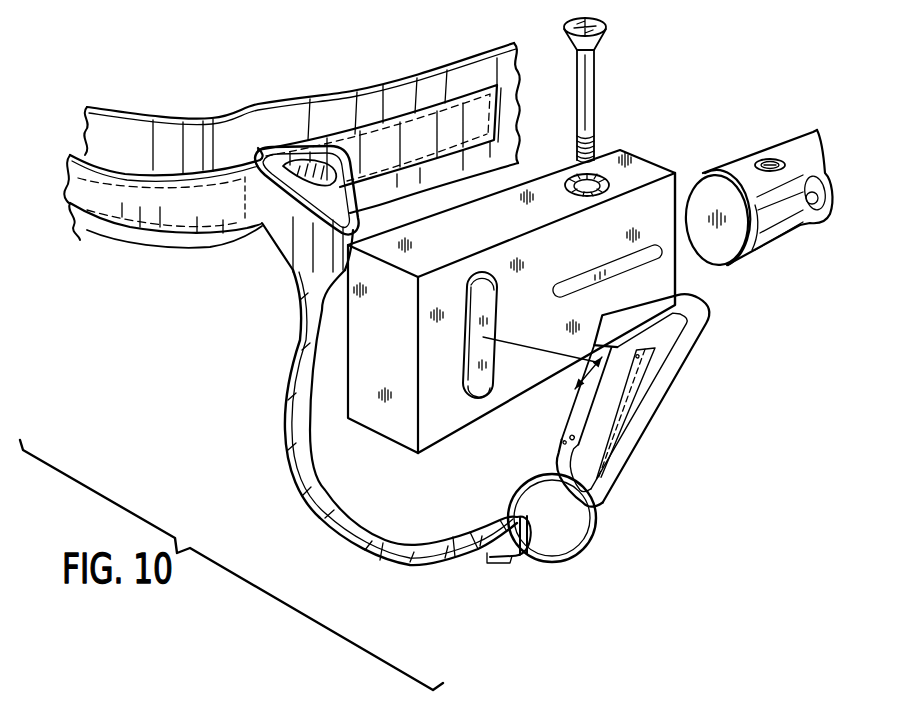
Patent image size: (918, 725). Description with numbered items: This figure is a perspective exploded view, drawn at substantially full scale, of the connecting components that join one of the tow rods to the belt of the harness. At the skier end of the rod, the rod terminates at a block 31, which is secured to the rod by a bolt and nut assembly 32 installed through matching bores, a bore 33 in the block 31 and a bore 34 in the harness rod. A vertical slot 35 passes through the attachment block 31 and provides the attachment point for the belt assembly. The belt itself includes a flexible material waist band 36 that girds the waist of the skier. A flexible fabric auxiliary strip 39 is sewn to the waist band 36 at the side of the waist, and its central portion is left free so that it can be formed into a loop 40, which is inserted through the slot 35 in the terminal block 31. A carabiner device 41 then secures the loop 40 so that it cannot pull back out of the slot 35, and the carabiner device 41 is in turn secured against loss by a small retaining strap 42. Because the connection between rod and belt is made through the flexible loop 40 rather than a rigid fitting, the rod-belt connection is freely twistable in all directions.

The block 31 is at (650, 173).
The bolt and nut assembly 32 is at (597, 77).
The bore 33 is at (597, 174).
The bore 34 is at (773, 158).
The vertical slot 35 is at (468, 384).
The waist band 36 is at (446, 84).
The auxiliary strip 39 is at (150, 258).
The loop 40 is at (305, 265).
The carabiner device 41 is at (652, 412).
The retaining strap 42 is at (340, 540).